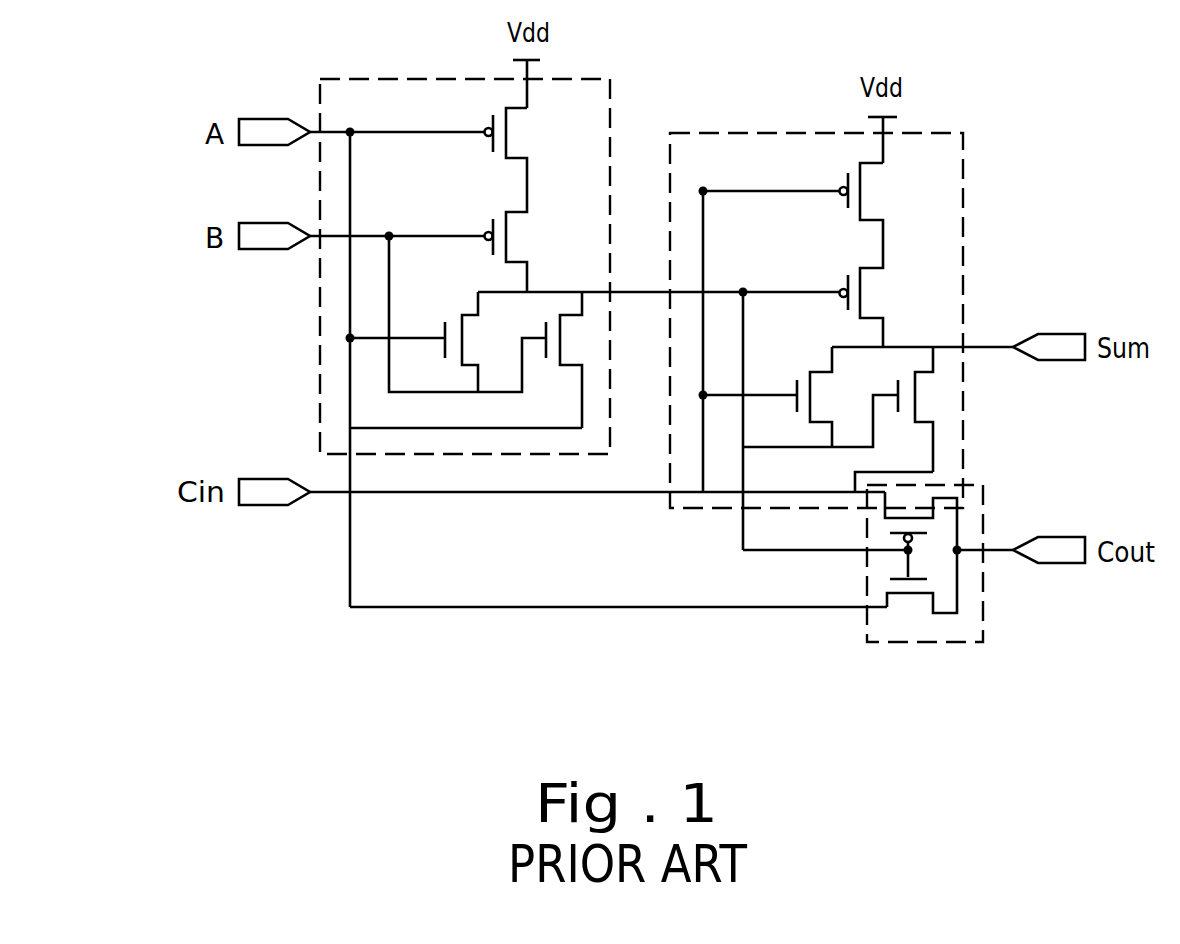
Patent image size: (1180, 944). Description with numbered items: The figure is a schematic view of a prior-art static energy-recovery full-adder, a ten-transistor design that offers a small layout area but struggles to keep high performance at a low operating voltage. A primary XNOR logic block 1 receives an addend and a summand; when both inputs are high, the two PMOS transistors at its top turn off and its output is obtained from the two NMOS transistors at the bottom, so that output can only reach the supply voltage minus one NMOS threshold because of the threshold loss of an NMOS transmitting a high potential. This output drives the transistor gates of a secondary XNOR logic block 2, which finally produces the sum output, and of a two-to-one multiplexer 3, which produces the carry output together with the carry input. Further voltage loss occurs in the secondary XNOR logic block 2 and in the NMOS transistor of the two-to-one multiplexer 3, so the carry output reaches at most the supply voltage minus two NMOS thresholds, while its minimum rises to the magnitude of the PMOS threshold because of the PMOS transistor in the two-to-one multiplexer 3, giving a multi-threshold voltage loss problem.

The primary XNOR logic block 1 is at (582, 92).
The secondary XNOR logic block 2 is at (948, 145).
The 2-to-1 multiplexer 3 is at (928, 633).